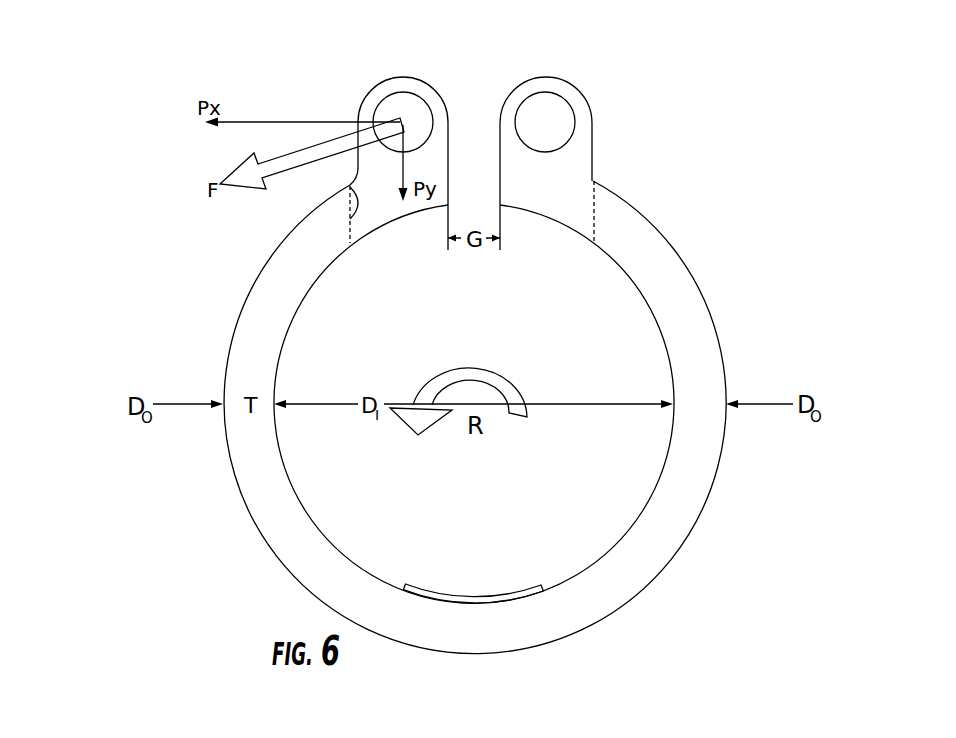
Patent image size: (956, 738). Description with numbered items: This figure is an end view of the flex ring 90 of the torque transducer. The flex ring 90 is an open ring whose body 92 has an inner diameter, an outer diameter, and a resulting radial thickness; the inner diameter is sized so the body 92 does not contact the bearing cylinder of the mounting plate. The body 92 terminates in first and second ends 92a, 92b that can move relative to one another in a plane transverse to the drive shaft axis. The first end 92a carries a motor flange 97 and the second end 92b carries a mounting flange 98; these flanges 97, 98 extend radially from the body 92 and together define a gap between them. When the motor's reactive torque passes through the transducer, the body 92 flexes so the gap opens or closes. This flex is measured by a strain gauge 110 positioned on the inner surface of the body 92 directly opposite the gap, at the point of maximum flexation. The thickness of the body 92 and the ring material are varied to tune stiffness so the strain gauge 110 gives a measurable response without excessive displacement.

The flex ring 90 is at (680, 110).
The body 92 is at (721, 357).
The first end 92a is at (350, 187).
The second end 92b is at (598, 218).
The motor flange 97 is at (397, 78).
The mounting flange 98 is at (547, 82).
The strain gauge 110 is at (488, 570).